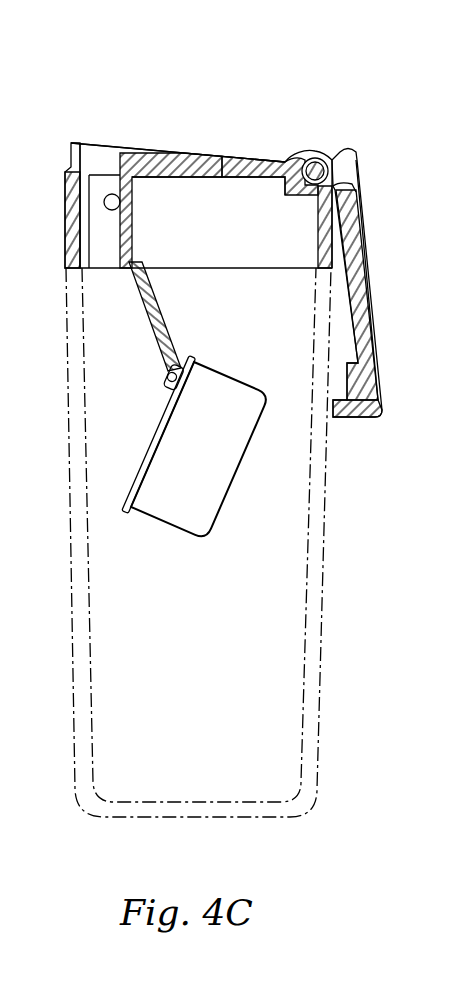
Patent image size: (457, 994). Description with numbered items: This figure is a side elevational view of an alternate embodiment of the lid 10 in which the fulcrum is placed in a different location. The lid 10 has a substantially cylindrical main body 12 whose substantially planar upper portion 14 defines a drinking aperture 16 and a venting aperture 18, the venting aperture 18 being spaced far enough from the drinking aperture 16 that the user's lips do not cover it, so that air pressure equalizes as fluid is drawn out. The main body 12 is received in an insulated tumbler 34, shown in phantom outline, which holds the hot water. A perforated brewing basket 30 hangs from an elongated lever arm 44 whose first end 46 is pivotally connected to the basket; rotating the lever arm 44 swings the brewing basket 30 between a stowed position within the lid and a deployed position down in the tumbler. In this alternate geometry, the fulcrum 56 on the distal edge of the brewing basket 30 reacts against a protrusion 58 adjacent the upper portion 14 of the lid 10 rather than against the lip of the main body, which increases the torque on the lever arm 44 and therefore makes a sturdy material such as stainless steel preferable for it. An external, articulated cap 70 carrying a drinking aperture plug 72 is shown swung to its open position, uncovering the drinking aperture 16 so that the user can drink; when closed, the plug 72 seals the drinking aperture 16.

The lid 10 is at (333, 78).
The main body 12 is at (65, 215).
The planar upper portion 14 is at (258, 162).
The drinking aperture 16 is at (100, 153).
The venting aperture 18 is at (218, 156).
The brewing basket 30 is at (205, 545).
The insulated tumbler 34 is at (318, 657).
The lever arm 44 is at (148, 321).
The first end 46 is at (165, 388).
The fulcrum 56 is at (191, 357).
The protrusion 58 is at (347, 233).
The articulated cap 70 is at (375, 323).
The drinking aperture plug 72 is at (333, 419).